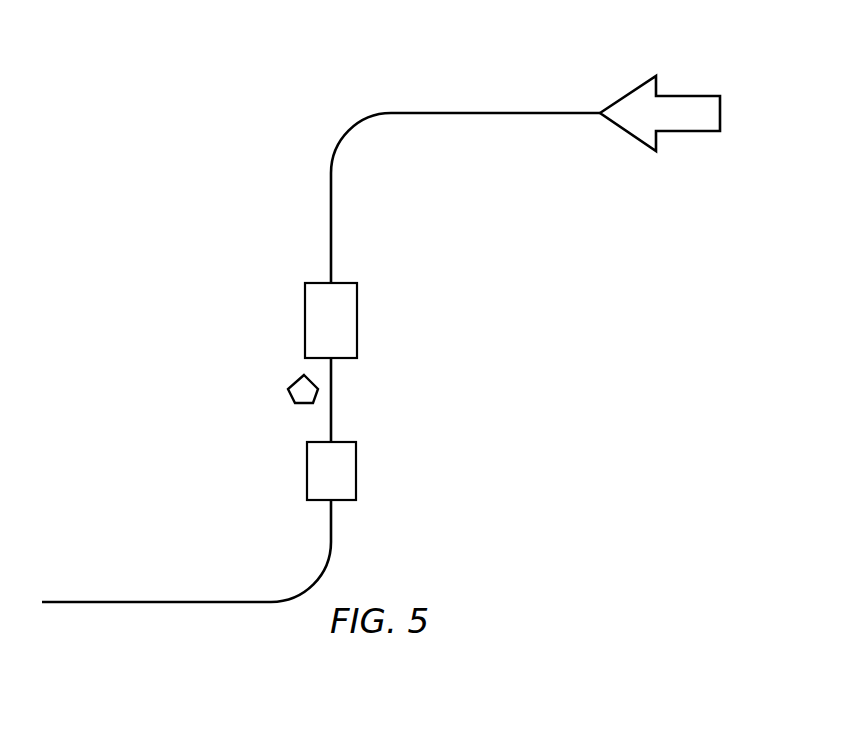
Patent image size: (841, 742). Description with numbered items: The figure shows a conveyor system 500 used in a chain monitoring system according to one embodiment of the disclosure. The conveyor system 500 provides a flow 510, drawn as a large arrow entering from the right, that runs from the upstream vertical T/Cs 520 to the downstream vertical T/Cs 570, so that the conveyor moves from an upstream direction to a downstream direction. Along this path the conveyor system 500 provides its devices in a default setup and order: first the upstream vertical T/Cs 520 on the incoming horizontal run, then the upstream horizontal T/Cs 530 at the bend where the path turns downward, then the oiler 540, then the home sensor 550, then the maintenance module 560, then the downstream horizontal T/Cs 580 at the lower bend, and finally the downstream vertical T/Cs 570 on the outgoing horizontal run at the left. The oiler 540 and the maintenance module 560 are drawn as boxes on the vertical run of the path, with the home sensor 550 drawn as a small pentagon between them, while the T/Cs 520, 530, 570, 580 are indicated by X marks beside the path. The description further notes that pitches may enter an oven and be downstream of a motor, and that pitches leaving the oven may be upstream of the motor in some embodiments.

The conveyor system 500 is at (205, 84).
The flow 510 is at (660, 113).
The upstream vertical T/Cs 520 is at (548, 66).
The upstream horizontal T/Cs 530 is at (378, 172).
The oiler 540 is at (331, 320).
The home sensor 550 is at (288, 390).
The maintenance module 560 is at (331, 471).
The downstream vertical T/Cs 570 is at (100, 570).
The downstream horizontal T/Cs 580 is at (280, 550).